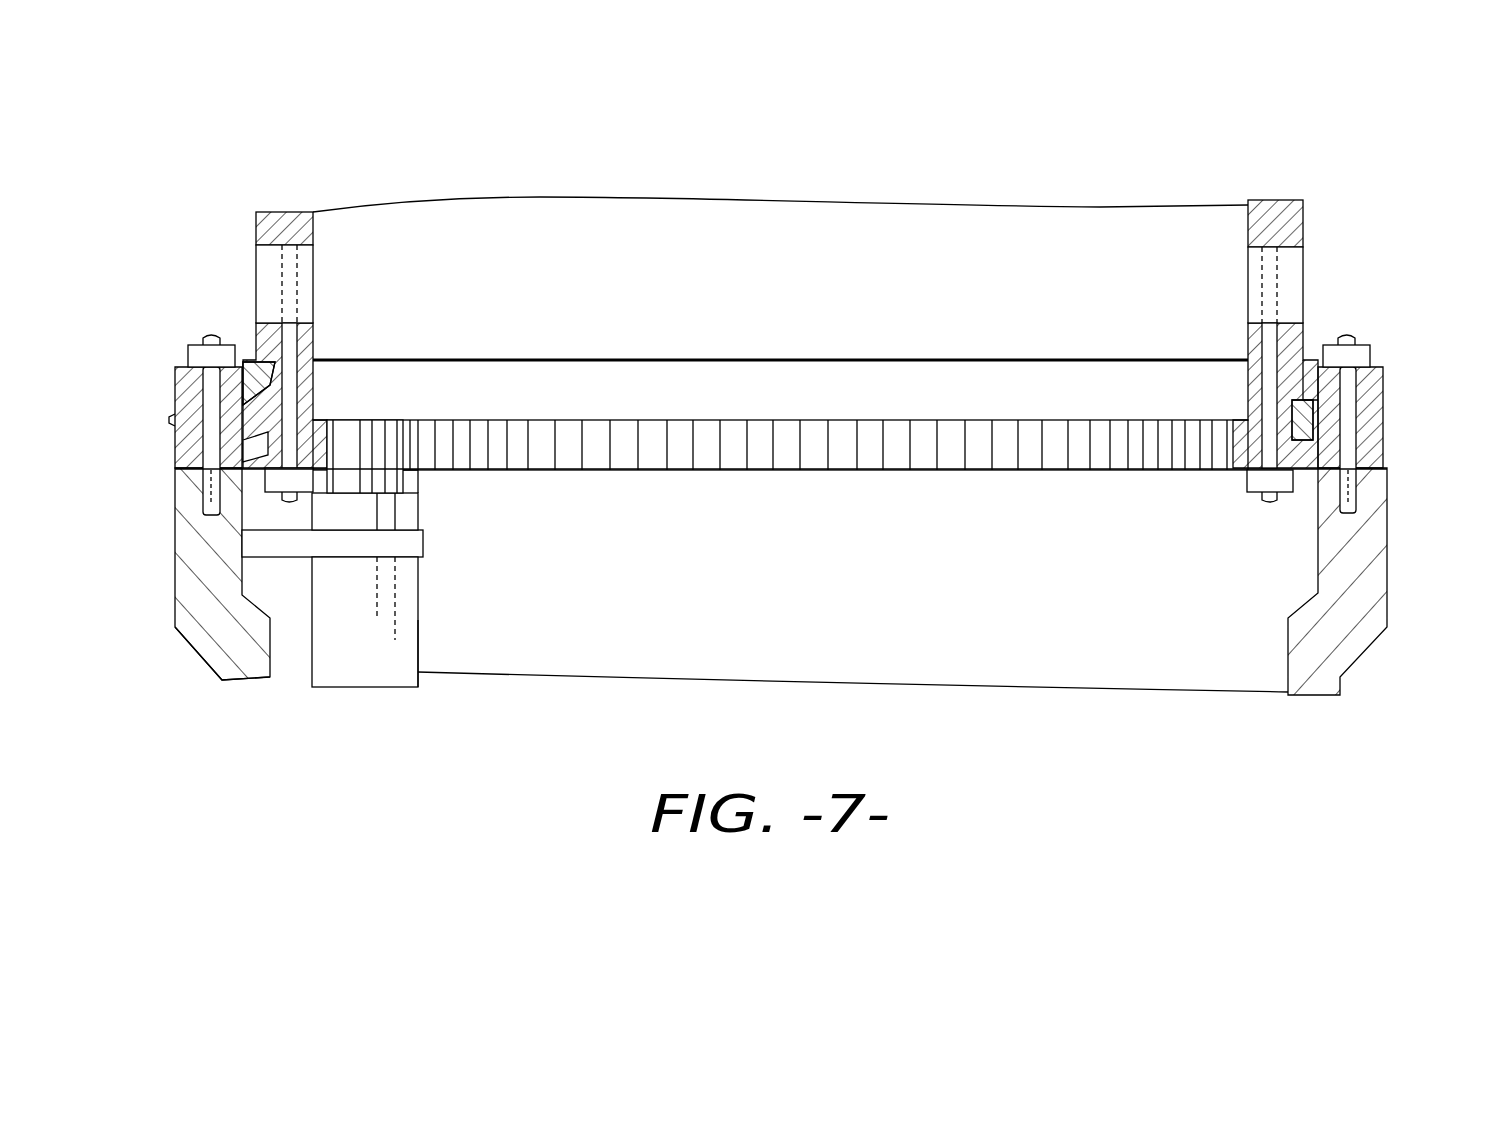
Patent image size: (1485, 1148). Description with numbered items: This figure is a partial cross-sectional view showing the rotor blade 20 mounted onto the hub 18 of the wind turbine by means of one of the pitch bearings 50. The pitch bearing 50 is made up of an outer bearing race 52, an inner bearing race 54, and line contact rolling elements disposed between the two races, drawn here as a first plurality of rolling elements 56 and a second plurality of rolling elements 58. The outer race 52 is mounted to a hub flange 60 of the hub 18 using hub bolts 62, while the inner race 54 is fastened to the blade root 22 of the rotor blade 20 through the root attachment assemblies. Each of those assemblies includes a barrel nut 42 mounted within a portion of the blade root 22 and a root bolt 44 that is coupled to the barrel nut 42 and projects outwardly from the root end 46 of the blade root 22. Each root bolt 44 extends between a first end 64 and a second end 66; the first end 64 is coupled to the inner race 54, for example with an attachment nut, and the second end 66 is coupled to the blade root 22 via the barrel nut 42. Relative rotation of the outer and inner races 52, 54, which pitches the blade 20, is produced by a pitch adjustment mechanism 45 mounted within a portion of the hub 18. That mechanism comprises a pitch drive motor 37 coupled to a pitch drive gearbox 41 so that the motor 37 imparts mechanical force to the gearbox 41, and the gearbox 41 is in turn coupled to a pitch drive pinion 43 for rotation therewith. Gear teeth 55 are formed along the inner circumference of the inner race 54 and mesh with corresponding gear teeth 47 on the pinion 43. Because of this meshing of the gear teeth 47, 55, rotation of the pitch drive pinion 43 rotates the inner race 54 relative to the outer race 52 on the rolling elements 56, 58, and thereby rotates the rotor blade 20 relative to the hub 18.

The hub 18 is at (183, 650).
The rotor blade 20 is at (992, 206).
The blade root 22 is at (1283, 216).
The pitch drive motor 37 is at (358, 658).
The pitch drive gearbox 41 is at (405, 520).
The barrel nut 42 is at (258, 262).
The pitch drive pinion 43 is at (405, 480).
The root bolt 44 is at (290, 345).
The pitch adjustment mechanism 45 is at (420, 645).
The root end 46 is at (614, 362).
The gear teeth 47 is at (407, 433).
The pitch bearing 50 is at (1075, 473).
The outer bearing race 52 is at (1390, 387).
The inner bearing race 54 is at (1252, 441).
The gear teeth 55 is at (638, 443).
The first plurality of rolling elements 56 is at (1300, 397).
The second plurality of rolling elements 58 is at (1310, 447).
The hub flange 60 is at (182, 537).
The hub bolt 62 is at (203, 392).
The first end 64 is at (297, 503).
The second end 66 is at (300, 290).